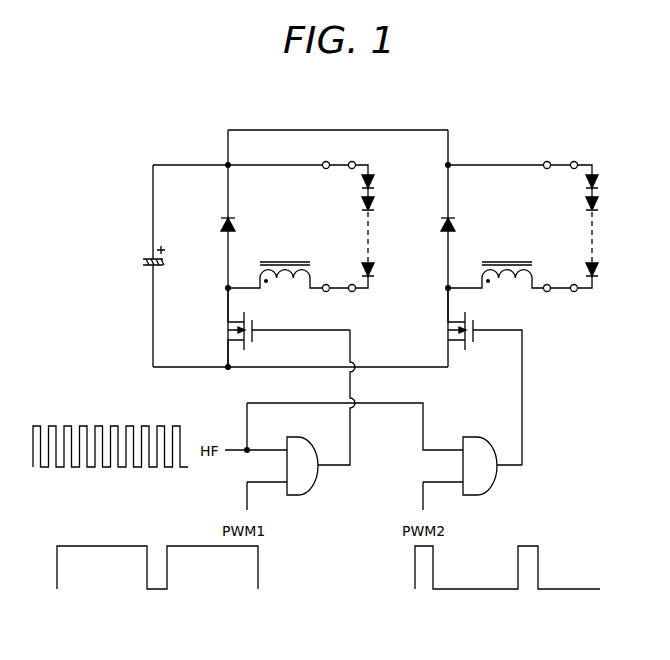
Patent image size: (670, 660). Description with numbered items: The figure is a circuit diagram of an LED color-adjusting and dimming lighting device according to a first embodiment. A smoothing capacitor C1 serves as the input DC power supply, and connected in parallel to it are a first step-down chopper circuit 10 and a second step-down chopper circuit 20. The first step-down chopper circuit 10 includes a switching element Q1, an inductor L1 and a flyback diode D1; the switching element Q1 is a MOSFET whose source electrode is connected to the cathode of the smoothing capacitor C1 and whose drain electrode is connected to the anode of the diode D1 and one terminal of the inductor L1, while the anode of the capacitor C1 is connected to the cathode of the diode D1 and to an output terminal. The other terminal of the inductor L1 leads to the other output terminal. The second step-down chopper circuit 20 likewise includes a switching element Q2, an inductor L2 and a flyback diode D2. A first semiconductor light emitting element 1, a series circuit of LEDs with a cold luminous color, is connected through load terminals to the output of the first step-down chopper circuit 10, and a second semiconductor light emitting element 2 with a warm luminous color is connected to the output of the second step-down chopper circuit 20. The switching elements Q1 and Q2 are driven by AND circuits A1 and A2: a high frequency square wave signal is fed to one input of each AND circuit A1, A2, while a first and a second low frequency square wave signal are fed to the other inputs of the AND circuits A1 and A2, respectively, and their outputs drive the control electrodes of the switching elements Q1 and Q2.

The first semiconductor light emitting element 1 is at (378, 244).
The second semiconductor light emitting element 2 is at (602, 244).
The first step-down chopper circuit 10 is at (275, 275).
The second step-down chopper circuit 20 is at (495, 275).
The smoothing capacitor C1 is at (141, 259).
The flyback diode D1 is at (216, 225).
The flyback diode D2 is at (436, 225).
The inductor L1 is at (296, 308).
The inductor L2 is at (515, 308).
The switching element Q1 is at (276, 327).
The switching element Q2 is at (471, 376).
The AND circuit A1 is at (312, 468).
The AND circuit A2 is at (487, 468).